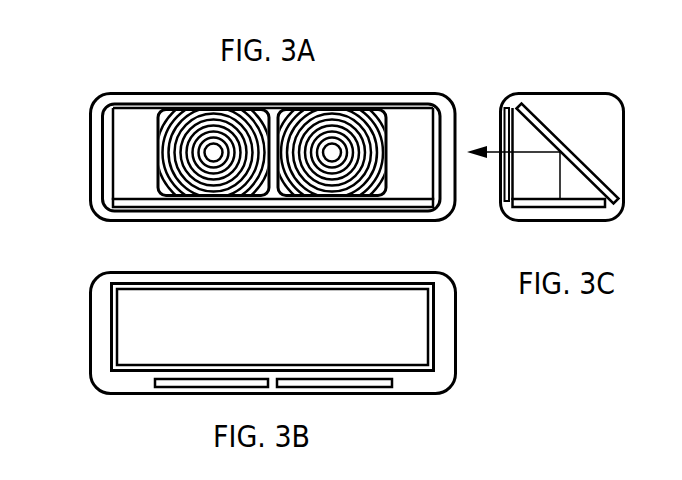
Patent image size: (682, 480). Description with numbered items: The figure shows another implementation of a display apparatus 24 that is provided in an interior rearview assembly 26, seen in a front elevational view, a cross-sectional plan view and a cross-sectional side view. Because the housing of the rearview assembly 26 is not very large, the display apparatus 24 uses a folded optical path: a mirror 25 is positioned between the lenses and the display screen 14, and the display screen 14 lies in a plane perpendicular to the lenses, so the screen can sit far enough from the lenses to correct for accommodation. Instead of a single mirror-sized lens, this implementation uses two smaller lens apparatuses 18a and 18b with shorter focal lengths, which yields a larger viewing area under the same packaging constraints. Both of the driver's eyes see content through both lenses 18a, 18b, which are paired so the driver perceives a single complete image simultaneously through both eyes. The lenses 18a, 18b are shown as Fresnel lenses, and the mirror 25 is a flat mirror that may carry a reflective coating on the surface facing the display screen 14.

In FIG. 3A, the display screen 14 is at (167, 211).
In FIG. 3C, the display screen 14 is at (567, 207).
In FIG. 3B, the display screen 14 is at (110, 360).
In FIG. 3A, the first lens apparatus 18a is at (200, 115).
In FIG. 3B, the first lens apparatus 18a is at (215, 388).
In FIG. 3A, the second lens apparatus 18b is at (312, 110).
In FIG. 3C, the second lens apparatus 18b is at (509, 107).
In FIG. 3B, the second lens apparatus 18b is at (372, 389).
In FIG. 3A, the display apparatus 24 is at (89, 64).
In FIG. 3C, the display apparatus 24 is at (624, 66).
In FIG. 3B, the display apparatus 24 is at (352, 440).
In FIG. 3A, the mirror 25 is at (125, 150).
In FIG. 3C, the mirror 25 is at (592, 172).
In FIG. 3B, the mirror 25 is at (128, 310).
In FIG. 3A, the interior rearview assembly 26 is at (365, 221).
In FIG. 3C, the interior rearview assembly 26 is at (560, 92).
In FIG. 3B, the interior rearview assembly 26 is at (440, 393).